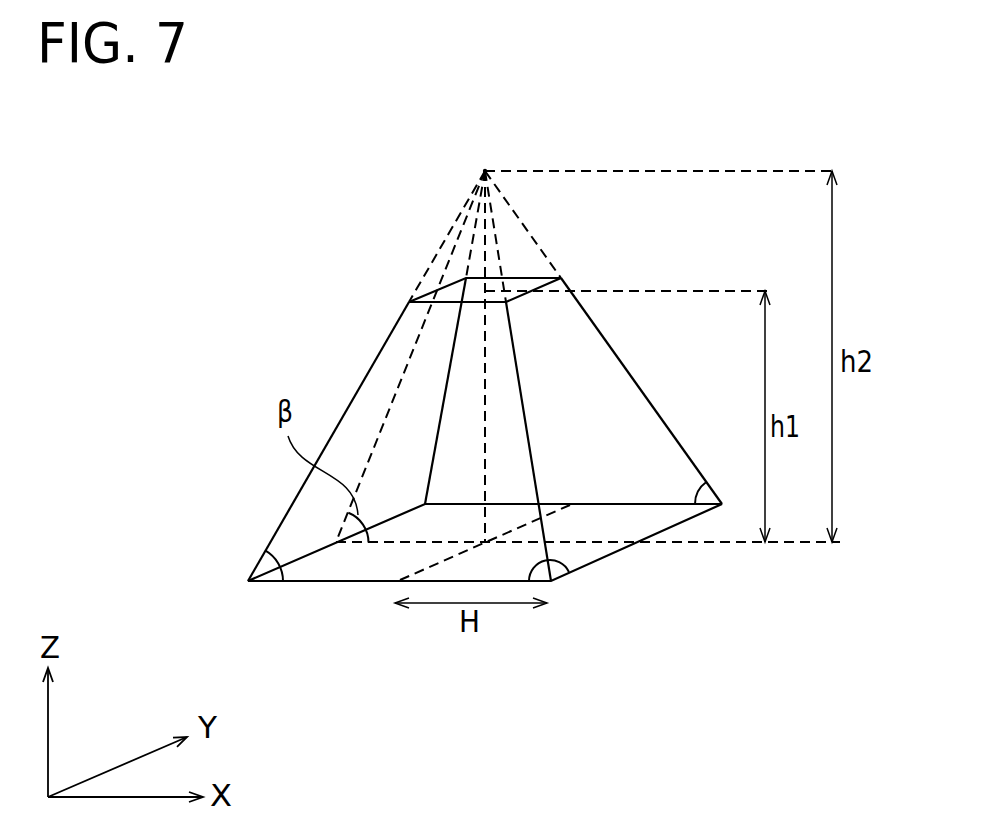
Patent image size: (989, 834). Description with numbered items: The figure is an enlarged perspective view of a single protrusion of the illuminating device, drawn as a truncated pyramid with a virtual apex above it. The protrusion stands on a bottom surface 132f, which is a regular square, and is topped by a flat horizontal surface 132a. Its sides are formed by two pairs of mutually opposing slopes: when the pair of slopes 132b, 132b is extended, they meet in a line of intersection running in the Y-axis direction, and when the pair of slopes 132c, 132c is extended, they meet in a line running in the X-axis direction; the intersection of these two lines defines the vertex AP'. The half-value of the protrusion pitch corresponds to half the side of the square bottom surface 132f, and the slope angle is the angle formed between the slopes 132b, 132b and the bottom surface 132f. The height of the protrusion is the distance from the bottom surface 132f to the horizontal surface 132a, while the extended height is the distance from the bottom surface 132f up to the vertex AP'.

The horizontal surface 132a is at (450, 293).
The slopes 132b is at (364, 400).
The slopes 132c is at (584, 344).
The bottom surface 132f is at (583, 557).
The vertex AP' is at (499, 133).